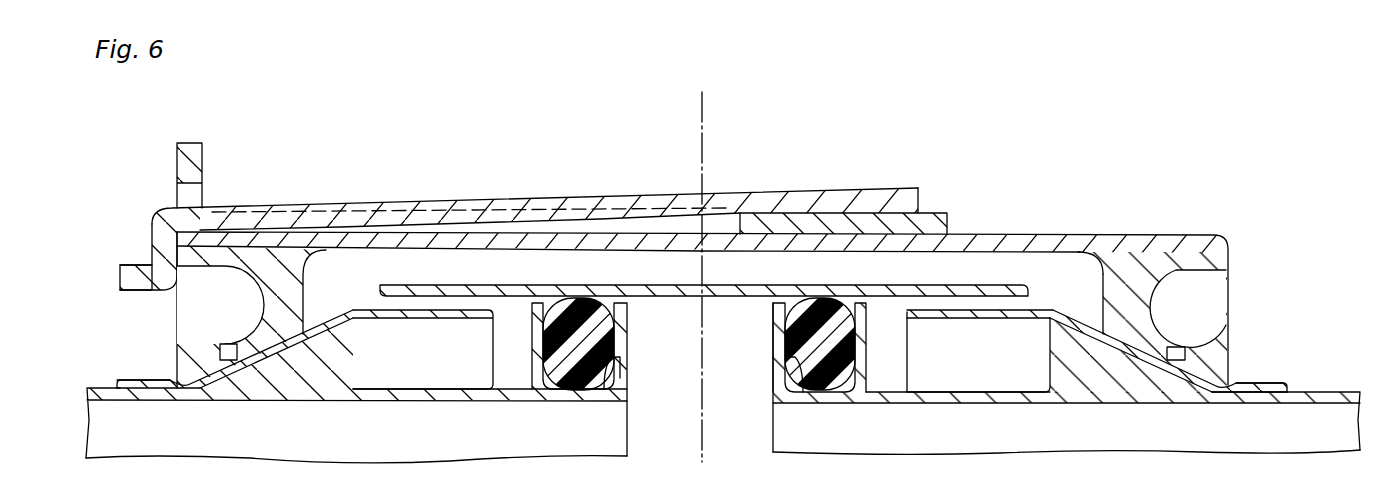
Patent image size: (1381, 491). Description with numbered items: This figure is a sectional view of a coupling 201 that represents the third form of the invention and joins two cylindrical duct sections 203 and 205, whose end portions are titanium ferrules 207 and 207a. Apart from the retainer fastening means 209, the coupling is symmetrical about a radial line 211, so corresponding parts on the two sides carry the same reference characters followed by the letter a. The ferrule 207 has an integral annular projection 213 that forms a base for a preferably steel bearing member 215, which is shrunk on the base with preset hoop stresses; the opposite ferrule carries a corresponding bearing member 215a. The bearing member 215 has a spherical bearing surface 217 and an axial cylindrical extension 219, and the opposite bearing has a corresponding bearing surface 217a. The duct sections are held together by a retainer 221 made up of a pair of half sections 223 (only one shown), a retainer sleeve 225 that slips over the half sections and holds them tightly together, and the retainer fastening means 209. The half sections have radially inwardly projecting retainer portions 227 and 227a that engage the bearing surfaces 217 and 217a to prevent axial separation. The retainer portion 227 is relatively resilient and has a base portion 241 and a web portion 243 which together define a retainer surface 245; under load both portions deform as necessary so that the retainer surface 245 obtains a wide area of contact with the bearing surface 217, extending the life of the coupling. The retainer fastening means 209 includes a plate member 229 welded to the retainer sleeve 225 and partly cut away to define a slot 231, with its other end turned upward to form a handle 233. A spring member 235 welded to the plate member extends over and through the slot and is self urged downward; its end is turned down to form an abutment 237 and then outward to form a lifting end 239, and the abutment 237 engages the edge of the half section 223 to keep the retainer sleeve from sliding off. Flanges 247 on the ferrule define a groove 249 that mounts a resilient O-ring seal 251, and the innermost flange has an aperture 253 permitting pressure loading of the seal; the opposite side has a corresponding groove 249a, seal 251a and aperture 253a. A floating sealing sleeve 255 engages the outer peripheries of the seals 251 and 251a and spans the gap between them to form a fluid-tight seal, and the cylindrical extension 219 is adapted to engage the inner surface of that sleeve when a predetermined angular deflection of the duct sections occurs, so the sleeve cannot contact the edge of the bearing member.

The coupling 201 is at (626, 145).
The duct section 203 is at (1333, 400).
The duct section 205 is at (111, 396).
The ferrule 207 is at (978, 397).
The ferrule 207a is at (420, 397).
The retainer fastening means 209 is at (353, 204).
The radial line 211 is at (703, 110).
The annular projection 213 is at (1068, 348).
The bearing member 215 is at (1258, 392).
The bearing member 215a is at (143, 388).
The spherical bearing surface 217 is at (1197, 368).
The spherical bearing surface 217a is at (190, 385).
The axial cylindrical extension 219 is at (1000, 323).
The retainer 221 is at (993, 215).
The half section 223 is at (1062, 252).
The retainer sleeve 225 is at (1015, 233).
The retainer portion 227 is at (1130, 258).
The retainer portion 227a is at (292, 297).
The plate member 229 is at (932, 222).
The slot 231 is at (720, 223).
The handle 233 is at (203, 157).
The spring member 235 is at (462, 210).
The abutment 237 is at (162, 248).
The lifting end 239 is at (122, 268).
The base portion 241 is at (1101, 290).
The web portion 243 is at (1170, 348).
The retainer surface 245 is at (1188, 308).
The flange 247 is at (787, 343).
The groove 249 is at (847, 378).
The groove 249a is at (612, 357).
The O-ring seal 251 is at (813, 365).
The O-ring seal 251a is at (572, 357).
The aperture 253 is at (782, 373).
The aperture 253a is at (630, 372).
The floating sealing sleeve 255 is at (683, 293).